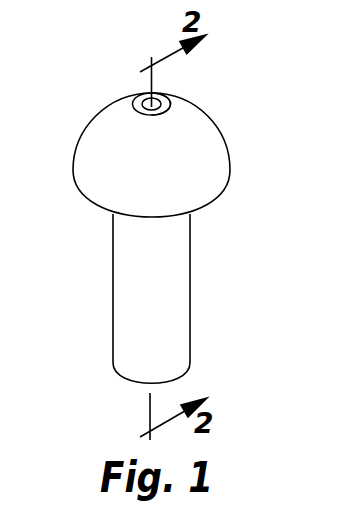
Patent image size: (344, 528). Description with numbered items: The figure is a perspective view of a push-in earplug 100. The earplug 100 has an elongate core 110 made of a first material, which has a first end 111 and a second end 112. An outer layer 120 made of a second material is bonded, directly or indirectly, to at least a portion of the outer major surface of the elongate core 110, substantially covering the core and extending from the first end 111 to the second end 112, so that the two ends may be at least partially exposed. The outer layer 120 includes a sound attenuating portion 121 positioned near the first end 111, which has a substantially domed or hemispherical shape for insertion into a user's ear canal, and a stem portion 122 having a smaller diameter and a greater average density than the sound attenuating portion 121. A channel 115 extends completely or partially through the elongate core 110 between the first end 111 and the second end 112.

The push-in earplug 100 is at (253, 78).
The elongate core 110 is at (137, 96).
The first end 111 is at (168, 99).
The second end 112 is at (177, 378).
The channel 115 is at (160, 98).
The outer layer 120 is at (95, 123).
The sound attenuating portion 121 is at (218, 160).
The stem portion 122 is at (178, 287).